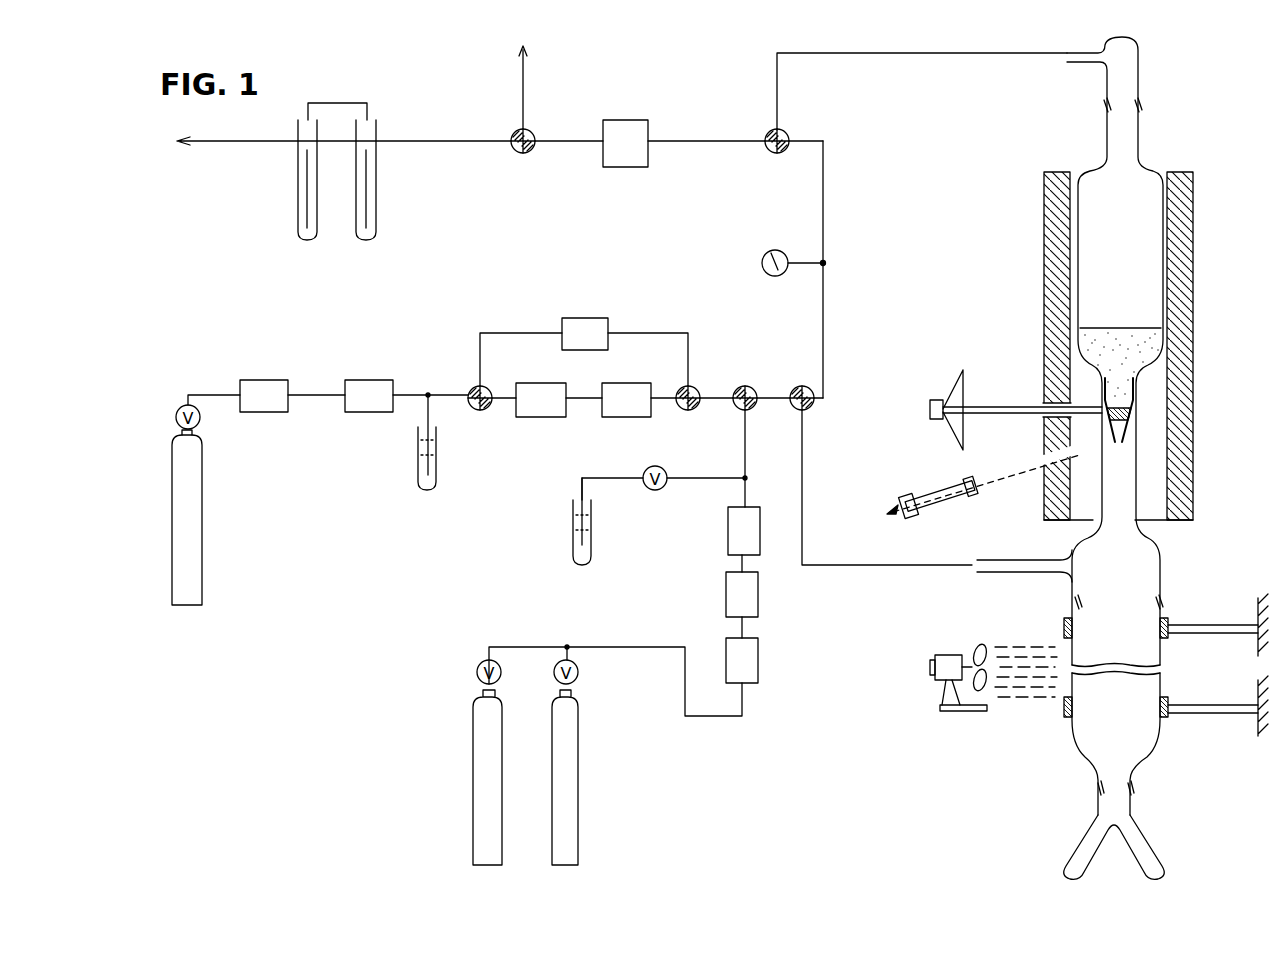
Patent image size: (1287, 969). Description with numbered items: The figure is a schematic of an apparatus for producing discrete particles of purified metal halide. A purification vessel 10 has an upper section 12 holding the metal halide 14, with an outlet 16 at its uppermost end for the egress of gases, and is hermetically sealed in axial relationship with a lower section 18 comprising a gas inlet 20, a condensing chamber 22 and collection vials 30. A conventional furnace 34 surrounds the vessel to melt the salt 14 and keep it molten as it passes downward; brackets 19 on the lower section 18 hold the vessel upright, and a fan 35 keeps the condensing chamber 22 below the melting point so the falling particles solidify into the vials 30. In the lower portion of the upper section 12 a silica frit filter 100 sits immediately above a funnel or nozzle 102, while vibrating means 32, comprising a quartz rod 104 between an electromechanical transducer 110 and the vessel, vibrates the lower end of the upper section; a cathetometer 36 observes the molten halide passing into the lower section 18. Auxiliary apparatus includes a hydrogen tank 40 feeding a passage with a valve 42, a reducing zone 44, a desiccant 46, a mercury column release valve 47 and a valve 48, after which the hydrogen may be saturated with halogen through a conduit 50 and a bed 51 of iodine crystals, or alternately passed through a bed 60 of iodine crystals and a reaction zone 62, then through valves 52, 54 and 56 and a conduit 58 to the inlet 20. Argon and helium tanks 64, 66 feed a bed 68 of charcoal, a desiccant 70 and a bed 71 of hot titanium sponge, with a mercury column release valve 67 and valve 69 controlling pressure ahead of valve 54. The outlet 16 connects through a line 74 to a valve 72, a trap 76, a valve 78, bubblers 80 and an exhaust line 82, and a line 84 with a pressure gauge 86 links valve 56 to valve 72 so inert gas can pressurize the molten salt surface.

The purification vessel 10 is at (1162, 152).
The upper section 12 is at (1145, 293).
The metal halide 14 is at (1150, 343).
The outlet 16 is at (1122, 78).
The lower section 18 is at (1145, 560).
The brackets 19 is at (1232, 625).
The gas inlet 20 is at (1028, 574).
The condensing chamber 22 is at (1143, 652).
The collection vials 30 is at (1126, 856).
The vibrating means 32 is at (1044, 405).
The furnace 34 is at (1044, 490).
The fan 35 is at (935, 660).
The cathetometer 36 is at (930, 497).
The tank 40 is at (202, 465).
The valve 42 is at (176, 417).
The reducing zone 44 is at (275, 380).
The desiccant 46 is at (377, 380).
The mercury column release valve 47 is at (417, 462).
The valve 48 is at (472, 388).
The conduit 50 is at (538, 333).
The bed of halogen crystals 51 is at (610, 323).
The valve 52 is at (695, 386).
The valve 54 is at (750, 386).
The valve 56 is at (802, 386).
The conduit 58 is at (802, 480).
The bed of halogen crystals 60 is at (530, 383).
The reaction zone 62 is at (608, 383).
The tank 64 is at (473, 728).
The tank 66 is at (578, 728).
The mercury column release valve 67 is at (573, 518).
The bed of charcoal 68 is at (760, 656).
The valve 69 is at (668, 460).
The desiccant 70 is at (726, 597).
The bed of reducing agent 71 is at (728, 530).
The valve 72 is at (768, 152).
The line 74 is at (934, 58).
The trap 76 is at (603, 153).
The valve 78 is at (512, 150).
The bubblers 80 is at (318, 200).
The line 82 is at (270, 141).
The line 84 is at (823, 355).
The pressure gauge 86 is at (766, 250).
The silica frit filter 100 is at (1126, 414).
The nozzle 102 is at (1122, 434).
The quartz rod 104 is at (1002, 413).
The electromechanical transducer 110 is at (932, 400).